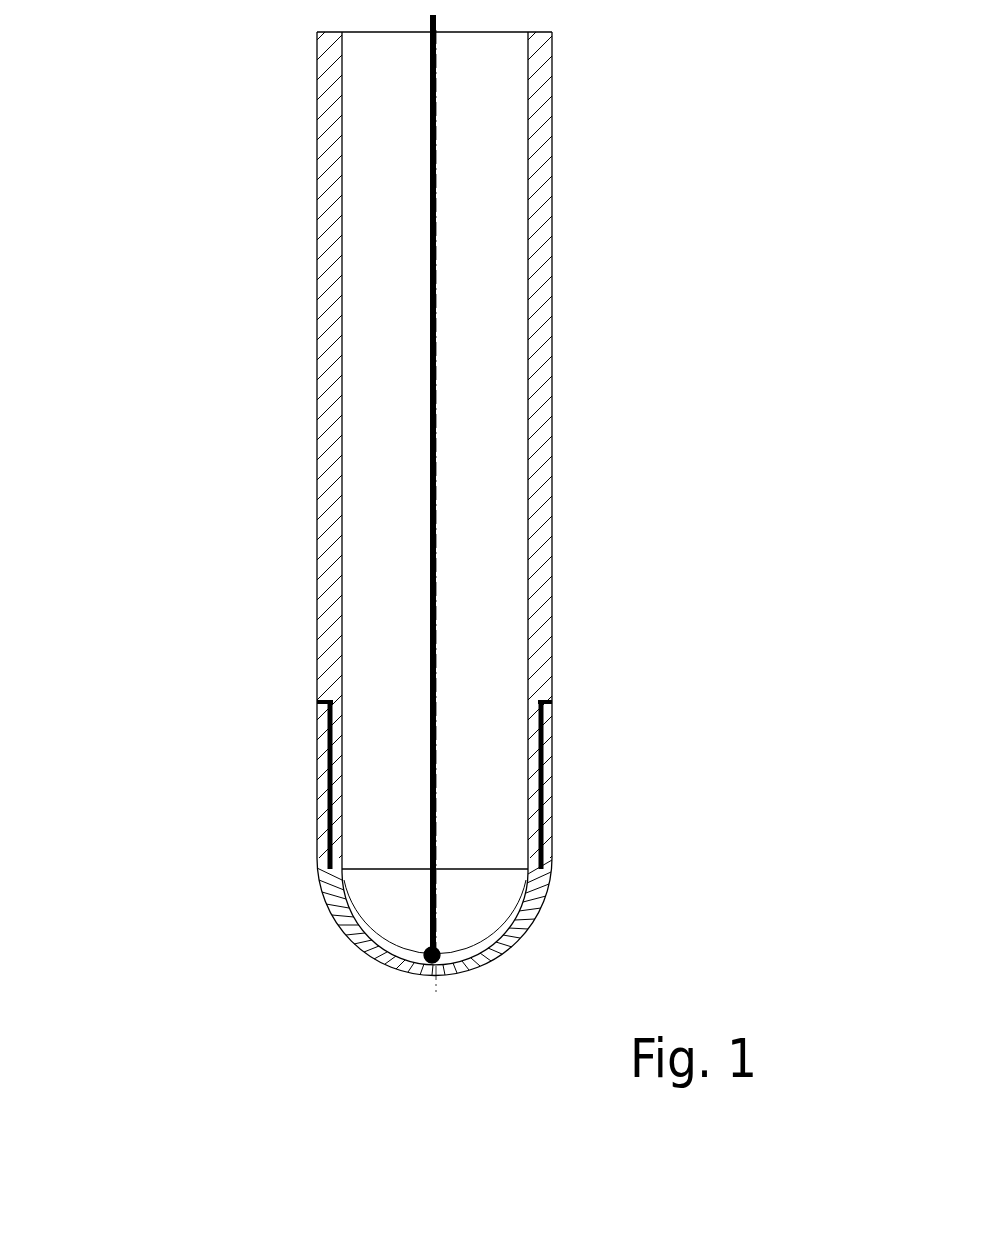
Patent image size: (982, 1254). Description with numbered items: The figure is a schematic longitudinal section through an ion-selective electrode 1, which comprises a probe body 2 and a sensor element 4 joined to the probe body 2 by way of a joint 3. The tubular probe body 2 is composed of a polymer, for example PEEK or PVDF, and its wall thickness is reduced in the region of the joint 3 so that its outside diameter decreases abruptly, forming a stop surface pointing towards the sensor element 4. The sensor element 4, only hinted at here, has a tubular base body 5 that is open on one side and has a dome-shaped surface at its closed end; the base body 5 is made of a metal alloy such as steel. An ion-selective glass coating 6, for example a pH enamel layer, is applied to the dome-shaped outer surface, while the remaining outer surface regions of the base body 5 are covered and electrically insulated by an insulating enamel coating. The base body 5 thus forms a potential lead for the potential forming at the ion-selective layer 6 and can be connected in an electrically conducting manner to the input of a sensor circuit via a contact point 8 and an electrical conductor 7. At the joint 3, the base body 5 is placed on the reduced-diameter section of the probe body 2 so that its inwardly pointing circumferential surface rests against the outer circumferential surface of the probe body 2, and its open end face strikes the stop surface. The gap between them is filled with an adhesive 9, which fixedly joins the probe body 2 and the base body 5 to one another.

The ion-selective electrode 1 is at (435, 503).
The probe body 2 is at (545, 555).
The joint 3 is at (435, 823).
The sensor element 4 is at (322, 884).
The base body 5 is at (548, 848).
The ion-selective glass coating 6 is at (515, 945).
The electrical conductor 7 is at (437, 450).
The contact point 8 is at (420, 957).
The adhesive 9 is at (547, 773).